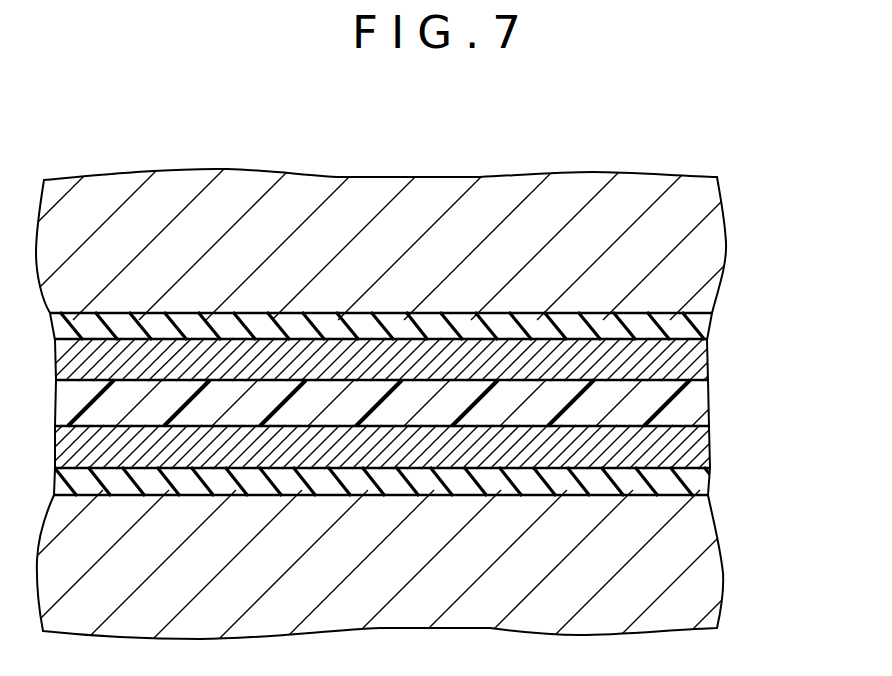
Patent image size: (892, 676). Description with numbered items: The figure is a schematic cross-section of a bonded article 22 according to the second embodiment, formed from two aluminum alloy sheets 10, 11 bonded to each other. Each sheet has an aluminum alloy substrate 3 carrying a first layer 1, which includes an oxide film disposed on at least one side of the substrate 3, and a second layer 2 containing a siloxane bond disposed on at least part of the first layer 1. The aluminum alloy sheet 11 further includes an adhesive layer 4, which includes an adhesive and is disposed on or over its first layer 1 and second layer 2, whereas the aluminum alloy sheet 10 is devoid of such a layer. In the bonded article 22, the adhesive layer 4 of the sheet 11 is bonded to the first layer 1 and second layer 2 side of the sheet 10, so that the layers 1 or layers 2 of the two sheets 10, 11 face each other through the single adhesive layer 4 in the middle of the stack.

The bonded article 22 is at (557, 141).
The aluminum alloy sheet 10 is at (790, 265).
The aluminum alloy sheet 11 is at (790, 388).
The aluminum alloy substrate 3 is at (685, 277).
The first layer 1 is at (677, 323).
The second layer 2 is at (677, 357).
The adhesive layer 4 is at (682, 402).